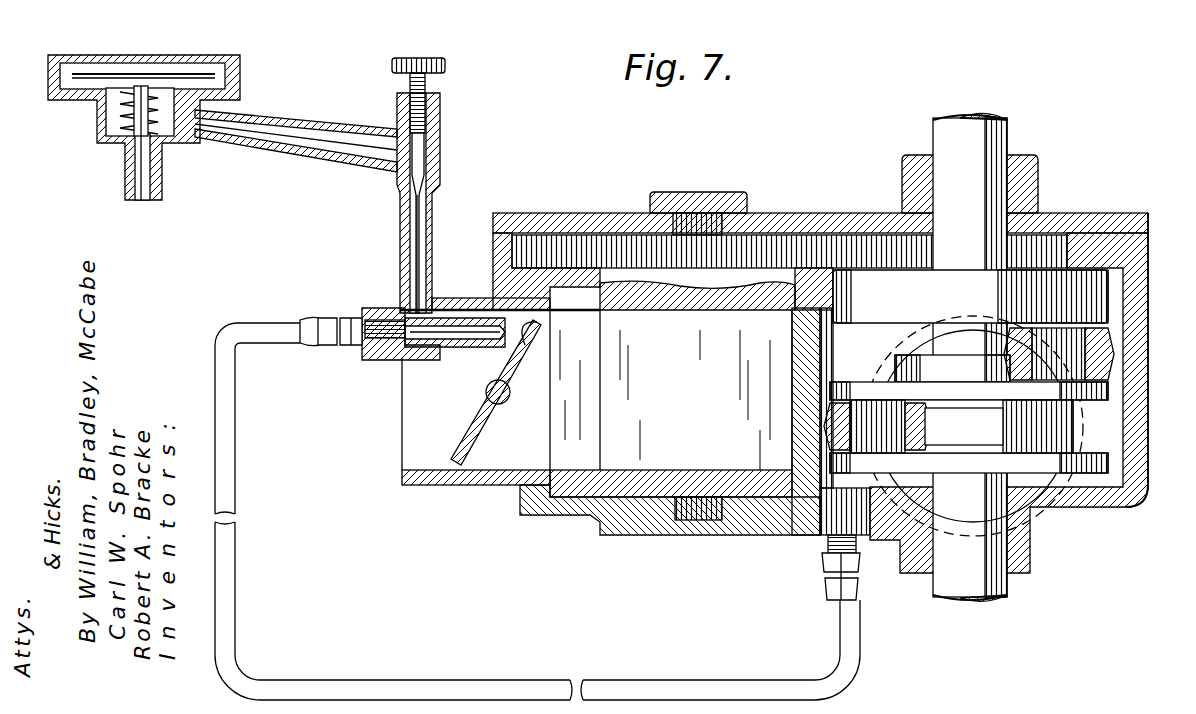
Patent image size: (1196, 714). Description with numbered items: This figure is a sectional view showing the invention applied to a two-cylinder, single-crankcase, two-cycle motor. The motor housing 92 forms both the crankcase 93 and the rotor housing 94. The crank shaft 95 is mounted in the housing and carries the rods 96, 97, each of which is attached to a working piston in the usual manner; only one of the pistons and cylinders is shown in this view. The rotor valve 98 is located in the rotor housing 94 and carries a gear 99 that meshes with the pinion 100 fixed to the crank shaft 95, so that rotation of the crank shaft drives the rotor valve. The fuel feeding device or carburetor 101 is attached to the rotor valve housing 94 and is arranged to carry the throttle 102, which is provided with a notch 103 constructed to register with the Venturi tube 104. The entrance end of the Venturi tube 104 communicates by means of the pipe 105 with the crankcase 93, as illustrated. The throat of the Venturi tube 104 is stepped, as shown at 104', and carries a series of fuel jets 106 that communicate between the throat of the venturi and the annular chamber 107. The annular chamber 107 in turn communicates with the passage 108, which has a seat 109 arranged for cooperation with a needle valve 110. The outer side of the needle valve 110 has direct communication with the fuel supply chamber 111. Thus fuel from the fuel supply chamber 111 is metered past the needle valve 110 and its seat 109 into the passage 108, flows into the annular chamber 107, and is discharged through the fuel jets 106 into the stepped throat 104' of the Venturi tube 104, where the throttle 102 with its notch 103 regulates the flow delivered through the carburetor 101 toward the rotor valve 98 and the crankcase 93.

The motor housing 92 is at (796, 515).
The crankcase 93 is at (1112, 430).
The rotor housing 94 is at (572, 500).
The crank shaft 95 is at (975, 550).
The rod 96 is at (832, 425).
The rod 97 is at (1112, 352).
The rotor valve 98 is at (829, 423).
The gear 99 is at (745, 255).
The pinion 100 is at (1022, 262).
The fuel feeding device or carburetor 101 is at (480, 480).
The throttle 102 is at (498, 404).
The notch 103 is at (548, 345).
The Venturi tube 104 is at (381, 414).
The stepped throat 104' is at (455, 353).
The pipe 105 is at (228, 568).
The fuel jets 106 is at (400, 362).
The annular chamber 107 is at (405, 312).
The passage 108 is at (412, 250).
The seat 109 is at (435, 188).
The needle valve 110 is at (422, 112).
The fuel supply chamber 111 is at (200, 100).